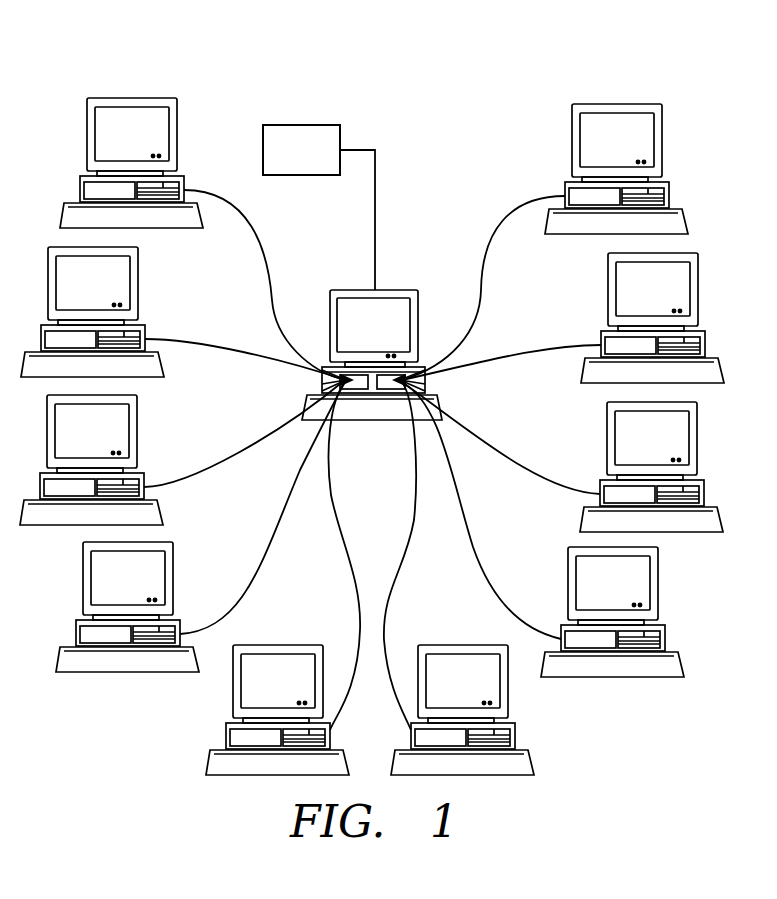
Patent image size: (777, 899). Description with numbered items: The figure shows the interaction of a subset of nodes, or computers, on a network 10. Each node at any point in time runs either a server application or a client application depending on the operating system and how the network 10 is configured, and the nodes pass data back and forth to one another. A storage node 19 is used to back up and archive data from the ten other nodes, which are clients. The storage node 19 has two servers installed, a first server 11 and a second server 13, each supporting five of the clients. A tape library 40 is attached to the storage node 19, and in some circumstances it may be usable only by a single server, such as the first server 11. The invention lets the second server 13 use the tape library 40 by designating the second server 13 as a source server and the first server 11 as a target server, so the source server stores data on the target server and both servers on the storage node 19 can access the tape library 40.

The network 10 is at (560, 66).
The tape library 40 is at (316, 165).
The storage node 19 is at (389, 338).
The second server 13 is at (345, 378).
The first server 11 is at (402, 378).